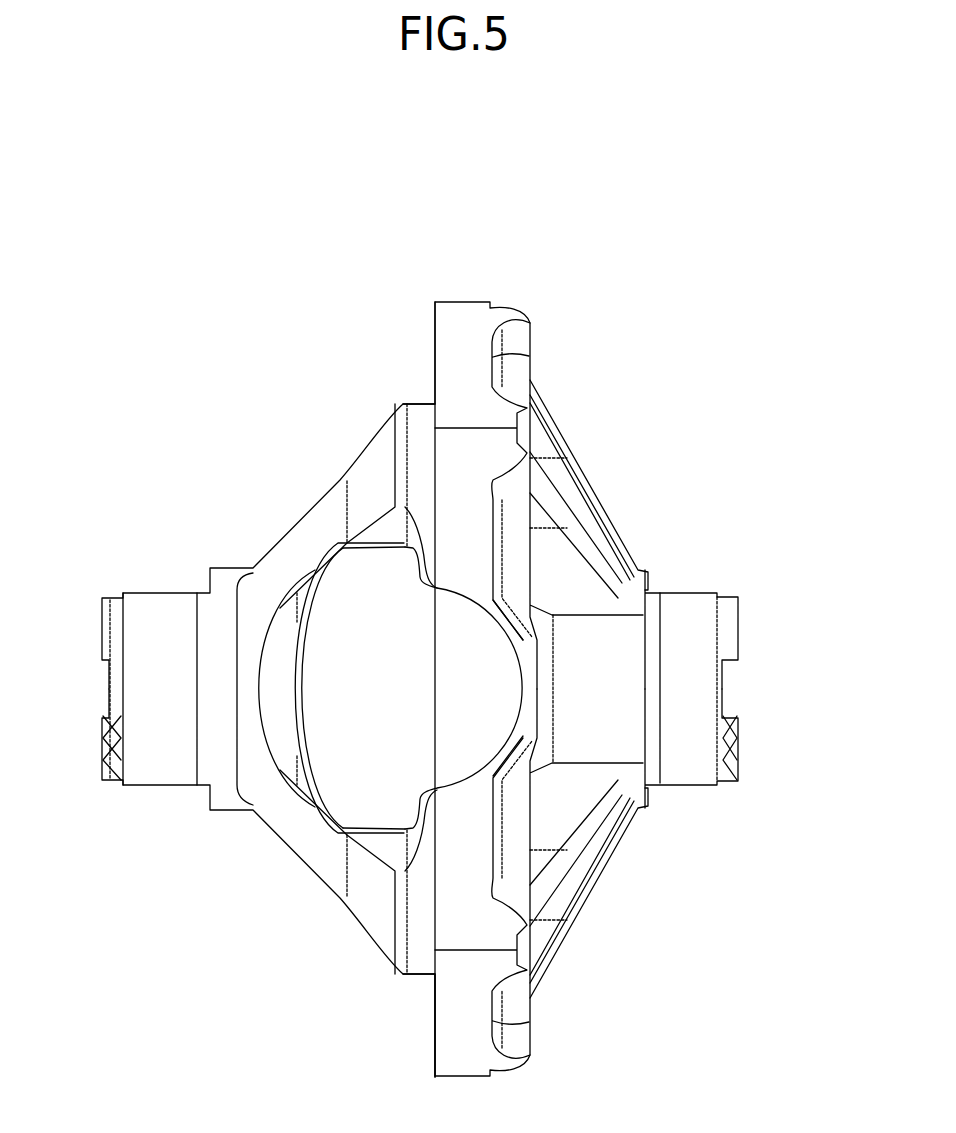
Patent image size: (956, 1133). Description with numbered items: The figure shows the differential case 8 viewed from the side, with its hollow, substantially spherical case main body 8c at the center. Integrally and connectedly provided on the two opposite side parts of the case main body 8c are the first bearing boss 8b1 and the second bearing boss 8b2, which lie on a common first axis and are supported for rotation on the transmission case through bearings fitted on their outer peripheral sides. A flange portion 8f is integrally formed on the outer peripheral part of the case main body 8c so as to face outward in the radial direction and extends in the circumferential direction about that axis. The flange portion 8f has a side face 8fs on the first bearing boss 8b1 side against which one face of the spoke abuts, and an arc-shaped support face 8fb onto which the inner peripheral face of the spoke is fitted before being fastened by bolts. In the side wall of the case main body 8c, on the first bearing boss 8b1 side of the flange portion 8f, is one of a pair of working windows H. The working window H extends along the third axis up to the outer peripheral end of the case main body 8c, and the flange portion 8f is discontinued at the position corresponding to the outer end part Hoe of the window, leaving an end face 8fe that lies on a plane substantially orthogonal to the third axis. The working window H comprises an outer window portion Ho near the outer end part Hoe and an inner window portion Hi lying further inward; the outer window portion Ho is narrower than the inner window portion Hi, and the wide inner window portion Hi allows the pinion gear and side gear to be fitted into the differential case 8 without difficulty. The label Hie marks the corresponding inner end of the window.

The differential case 8 is at (541, 1030).
The flange portion 8f is at (541, 346).
The side face 8fs is at (432, 1035).
The arc-shaped support face 8fb is at (410, 400).
The end face 8fe is at (472, 480).
The case main body 8c is at (295, 530).
The first bearing boss 8b1 is at (166, 788).
The second bearing boss 8b2 is at (688, 590).
The outer window portion Ho is at (468, 606).
The inner window portion Hi is at (327, 608).
The working window H is at (435, 683).
The inner spherical surface end Hie is at (283, 745).
The outer end part Hoe is at (493, 755).